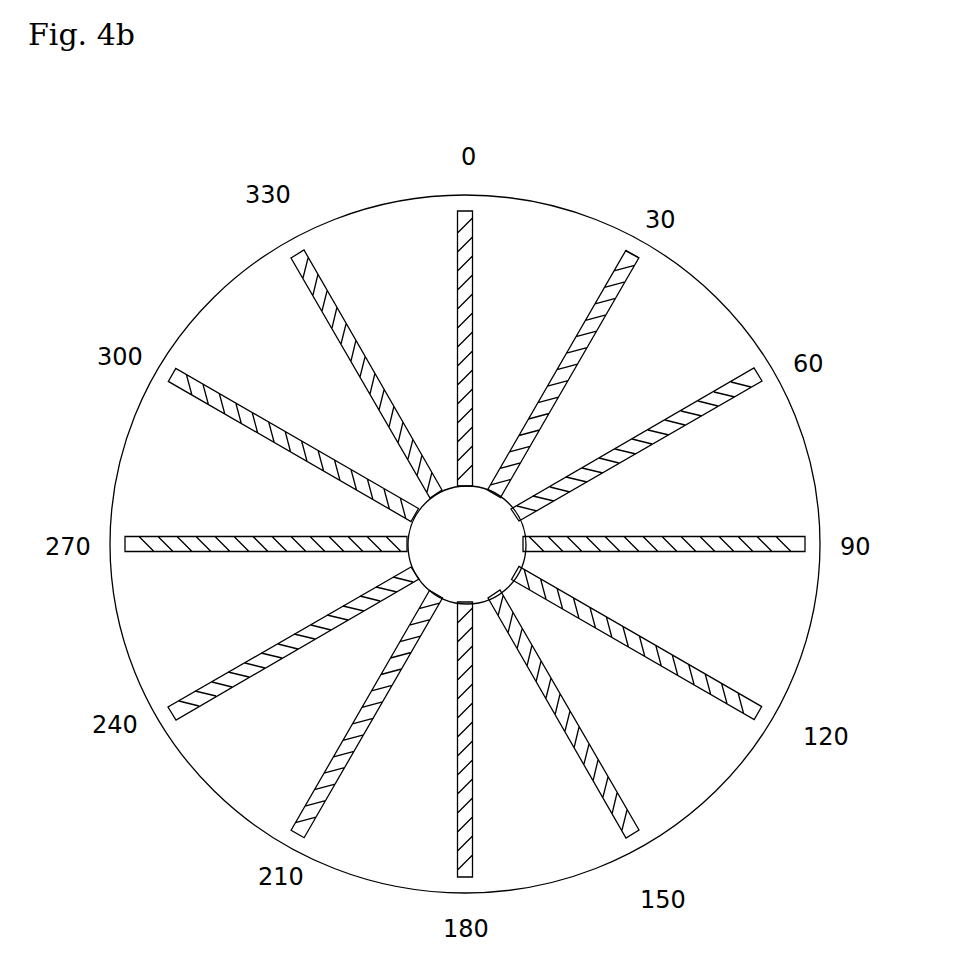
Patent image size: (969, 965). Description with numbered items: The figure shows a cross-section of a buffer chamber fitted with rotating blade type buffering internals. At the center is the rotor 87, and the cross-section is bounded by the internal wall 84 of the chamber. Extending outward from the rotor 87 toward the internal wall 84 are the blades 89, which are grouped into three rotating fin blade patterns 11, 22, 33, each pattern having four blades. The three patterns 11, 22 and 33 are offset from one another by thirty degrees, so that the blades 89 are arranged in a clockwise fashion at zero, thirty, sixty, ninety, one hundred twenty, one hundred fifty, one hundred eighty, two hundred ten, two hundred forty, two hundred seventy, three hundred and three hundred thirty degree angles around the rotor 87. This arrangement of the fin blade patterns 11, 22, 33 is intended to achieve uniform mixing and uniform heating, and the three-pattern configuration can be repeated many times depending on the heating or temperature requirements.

The rotating fin blade pattern 11 is at (478, 285).
The rotating fin blade pattern 22 is at (600, 335).
The rotating fin blade pattern 33 is at (757, 395).
The internal wall 84 is at (570, 207).
The rotor 87 is at (483, 557).
The blades 89 is at (633, 280).